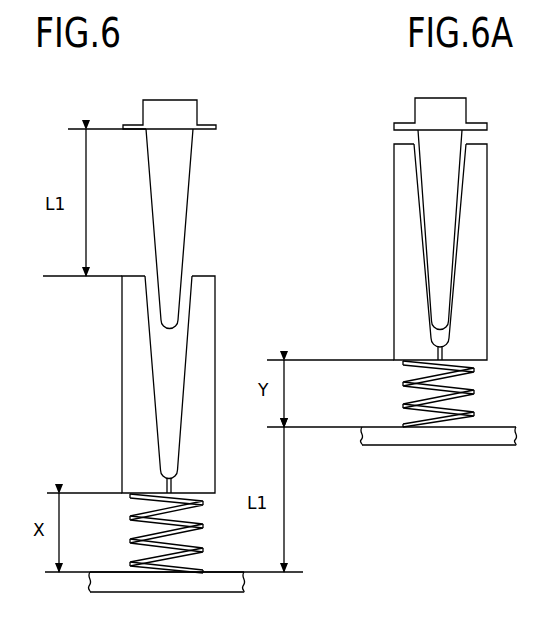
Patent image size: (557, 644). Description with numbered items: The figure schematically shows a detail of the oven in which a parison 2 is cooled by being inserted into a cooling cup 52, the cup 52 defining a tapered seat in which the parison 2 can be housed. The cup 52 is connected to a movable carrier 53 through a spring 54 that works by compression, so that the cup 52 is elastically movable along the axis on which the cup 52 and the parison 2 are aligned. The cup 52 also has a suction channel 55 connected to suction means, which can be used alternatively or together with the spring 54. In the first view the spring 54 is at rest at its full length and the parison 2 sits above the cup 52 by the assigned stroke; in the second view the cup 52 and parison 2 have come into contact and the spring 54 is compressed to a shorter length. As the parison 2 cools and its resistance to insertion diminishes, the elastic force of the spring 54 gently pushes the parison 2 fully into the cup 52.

In FIG. 6, the parison 2 is at (172, 149).
In FIG. 6A, the parison 2 is at (440, 168).
In FIG. 6, the cooling cup 52 is at (130, 336).
In FIG. 6A, the cooling cup 52 is at (405, 257).
In FIG. 6, the movable carrier 53 is at (102, 585).
In FIG. 6A, the movable carrier 53 is at (473, 433).
In FIG. 6, the spring 54 is at (162, 543).
In FIG. 6A, the spring 54 is at (418, 405).
In FIG. 6, the suction channel 55 is at (165, 484).
In FIG. 6A, the suction channel 55 is at (436, 353).